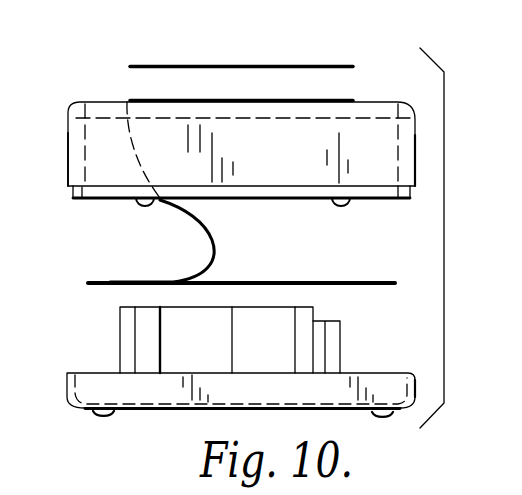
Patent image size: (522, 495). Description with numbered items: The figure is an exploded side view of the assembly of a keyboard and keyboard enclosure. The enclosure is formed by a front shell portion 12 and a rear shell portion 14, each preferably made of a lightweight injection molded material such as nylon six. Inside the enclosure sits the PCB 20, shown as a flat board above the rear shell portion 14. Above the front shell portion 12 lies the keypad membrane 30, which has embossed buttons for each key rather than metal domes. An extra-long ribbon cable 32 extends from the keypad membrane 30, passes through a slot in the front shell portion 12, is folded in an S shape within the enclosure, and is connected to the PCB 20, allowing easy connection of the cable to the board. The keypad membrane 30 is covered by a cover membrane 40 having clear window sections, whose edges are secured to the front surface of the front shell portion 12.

The front shell portion 12 is at (72, 125).
The rear shell portion 14 is at (67, 387).
The PCB 20 is at (125, 286).
The keypad membrane 30 is at (160, 98).
The ribbon cable 32 is at (203, 225).
The cover membrane 40 is at (202, 65).